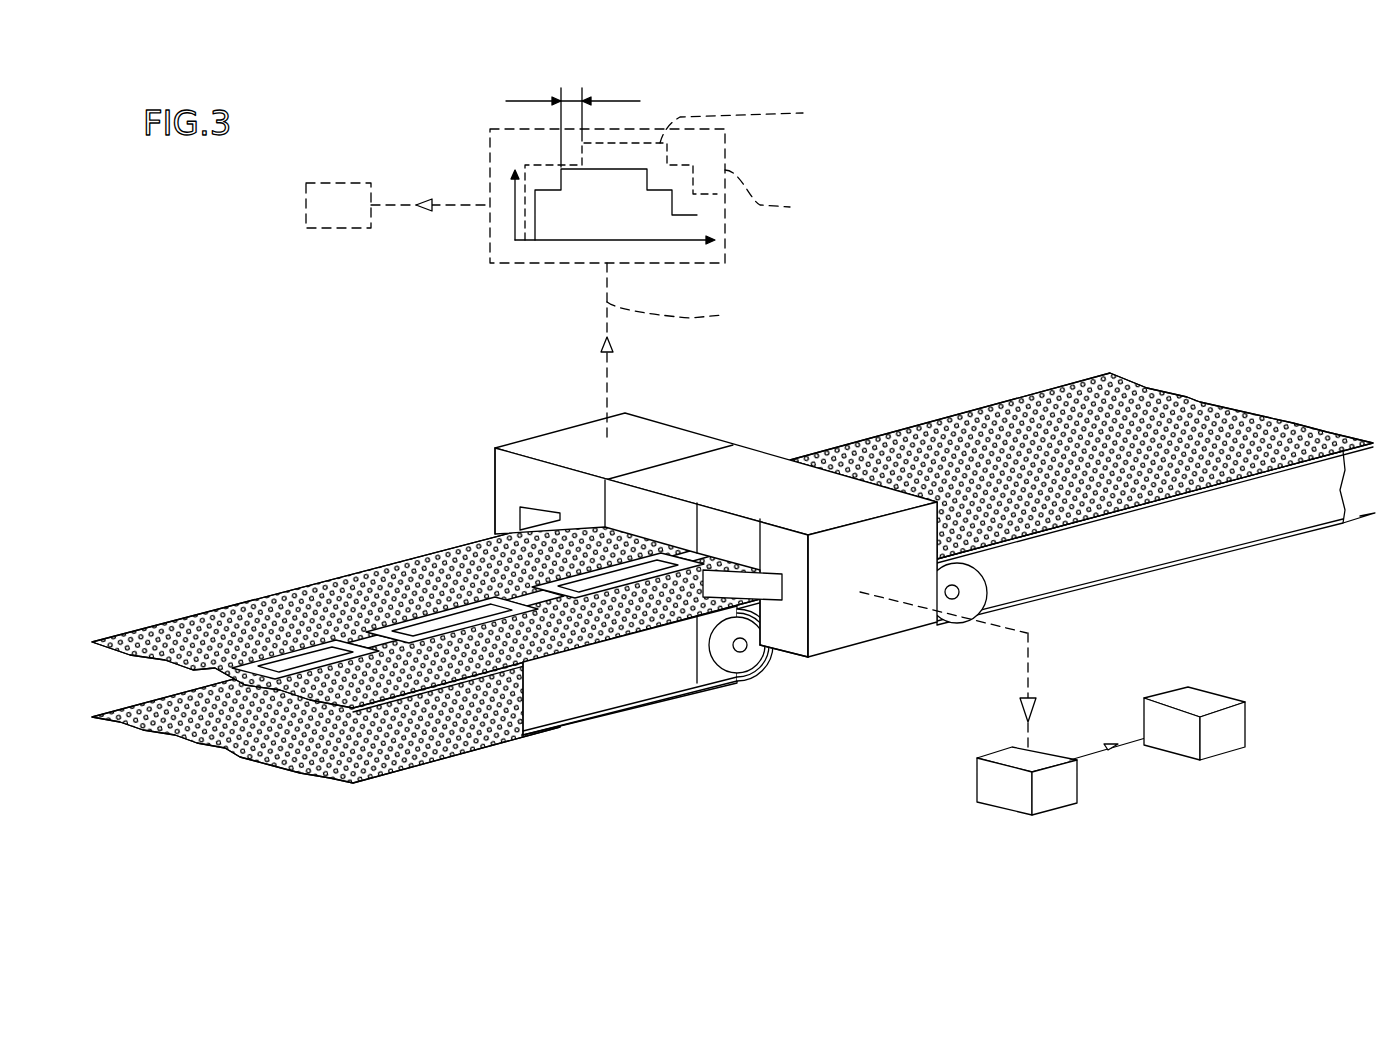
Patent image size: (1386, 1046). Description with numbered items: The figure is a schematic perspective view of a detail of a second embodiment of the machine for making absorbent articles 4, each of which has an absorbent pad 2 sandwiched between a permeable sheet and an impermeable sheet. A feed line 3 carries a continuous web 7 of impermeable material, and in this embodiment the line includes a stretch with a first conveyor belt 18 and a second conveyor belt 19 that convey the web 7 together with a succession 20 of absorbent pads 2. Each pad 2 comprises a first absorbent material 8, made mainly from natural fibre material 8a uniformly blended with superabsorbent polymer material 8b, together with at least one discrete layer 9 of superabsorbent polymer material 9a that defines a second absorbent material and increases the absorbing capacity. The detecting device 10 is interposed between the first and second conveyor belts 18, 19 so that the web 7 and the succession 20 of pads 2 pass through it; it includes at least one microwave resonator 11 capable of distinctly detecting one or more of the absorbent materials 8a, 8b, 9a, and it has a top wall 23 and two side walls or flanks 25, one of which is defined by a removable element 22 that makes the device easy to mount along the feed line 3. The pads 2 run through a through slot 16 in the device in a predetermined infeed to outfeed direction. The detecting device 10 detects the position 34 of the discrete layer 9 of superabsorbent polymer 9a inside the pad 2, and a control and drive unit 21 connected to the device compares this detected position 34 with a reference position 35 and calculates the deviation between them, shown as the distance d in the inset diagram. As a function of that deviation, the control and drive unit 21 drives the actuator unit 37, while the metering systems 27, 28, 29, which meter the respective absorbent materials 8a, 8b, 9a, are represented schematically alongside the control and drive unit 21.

The absorbent pad 2 is at (382, 622).
The feed line 3 is at (757, 747).
The absorbent article 4 is at (792, 563).
The continuous web of impermeable material 7 is at (320, 622).
The first absorbent material 8 is at (767, 639).
The natural fibre material 8a is at (767, 639).
The superabsorbent polymer material 8b is at (405, 635).
The discrete layer 9 is at (792, 612).
The superabsorbent polymer material 9a is at (437, 622).
The detecting device 10 is at (662, 525).
The microwave resonator 11 is at (716, 435).
The through slot 16 is at (520, 513).
The first conveyor belt 18 is at (240, 595).
The second conveyor belt 19 is at (880, 436).
The succession of absorbent pads 20 is at (220, 662).
The control and drive unit 21 is at (948, 836).
The removable element 22 is at (805, 637).
The top wall 23 is at (645, 441).
The side walls or flanks 25 is at (691, 543).
The metering system 27 is at (1188, 768).
The metering system 28 is at (1188, 768).
The metering system 29 is at (1215, 760).
The detected position 34 is at (714, 271).
The reference position 35 is at (597, 176).
The actuator unit 37 is at (323, 218).